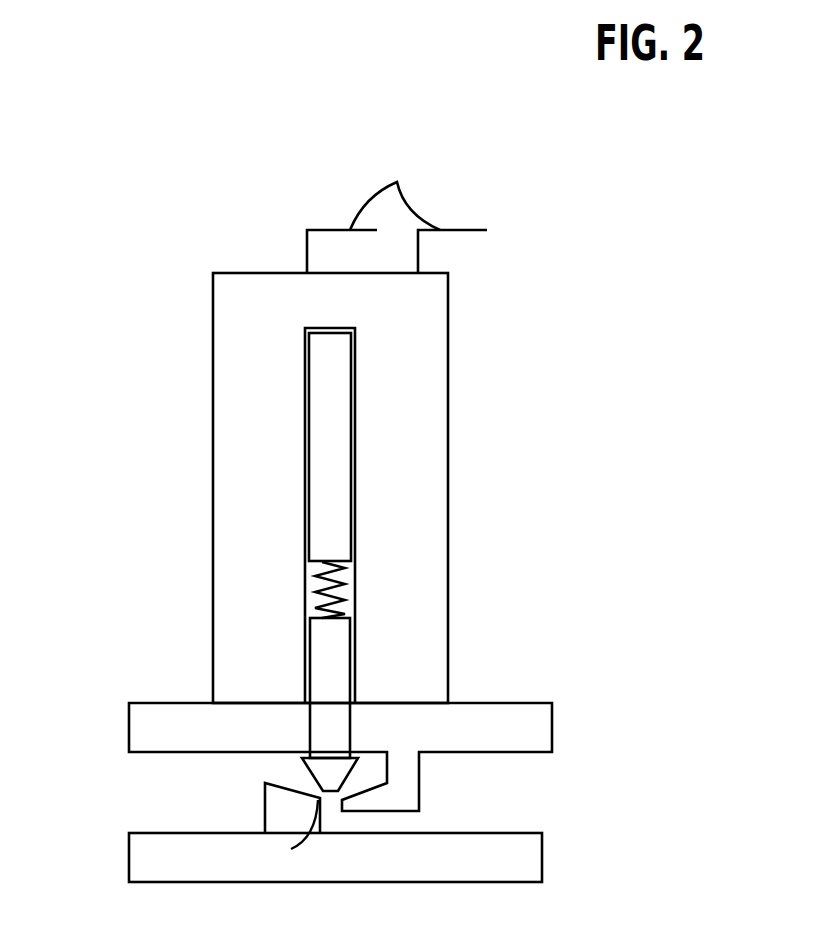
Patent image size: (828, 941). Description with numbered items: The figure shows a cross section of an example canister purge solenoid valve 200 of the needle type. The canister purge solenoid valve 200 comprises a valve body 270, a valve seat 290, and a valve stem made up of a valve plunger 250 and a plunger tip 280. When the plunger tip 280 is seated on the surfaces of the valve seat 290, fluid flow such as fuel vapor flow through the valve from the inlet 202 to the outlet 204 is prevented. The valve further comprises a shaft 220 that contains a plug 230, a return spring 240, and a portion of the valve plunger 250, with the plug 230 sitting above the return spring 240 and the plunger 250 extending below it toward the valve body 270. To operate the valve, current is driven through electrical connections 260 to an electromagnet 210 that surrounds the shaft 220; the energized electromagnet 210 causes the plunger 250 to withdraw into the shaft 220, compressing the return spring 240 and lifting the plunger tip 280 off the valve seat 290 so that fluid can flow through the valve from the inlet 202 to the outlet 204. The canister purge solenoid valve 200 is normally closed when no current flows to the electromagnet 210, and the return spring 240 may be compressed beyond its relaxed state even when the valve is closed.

The canister purge solenoid valve 200 is at (147, 162).
The inlet 202 is at (124, 798).
The outlet 204 is at (522, 798).
The electromagnet 210 is at (223, 273).
The shaft 220 is at (355, 348).
The plug 230 is at (329, 407).
The return spring 240 is at (333, 583).
The valve plunger 250 is at (335, 667).
The electrical connections 260 is at (395, 192).
The valve body 270 is at (500, 702).
The plunger tip 280 is at (340, 770).
The valve seat 290 is at (342, 800).